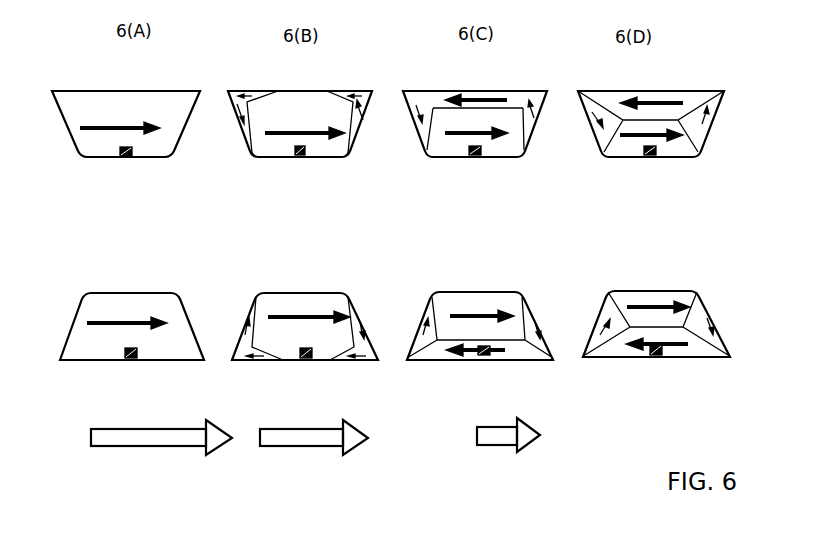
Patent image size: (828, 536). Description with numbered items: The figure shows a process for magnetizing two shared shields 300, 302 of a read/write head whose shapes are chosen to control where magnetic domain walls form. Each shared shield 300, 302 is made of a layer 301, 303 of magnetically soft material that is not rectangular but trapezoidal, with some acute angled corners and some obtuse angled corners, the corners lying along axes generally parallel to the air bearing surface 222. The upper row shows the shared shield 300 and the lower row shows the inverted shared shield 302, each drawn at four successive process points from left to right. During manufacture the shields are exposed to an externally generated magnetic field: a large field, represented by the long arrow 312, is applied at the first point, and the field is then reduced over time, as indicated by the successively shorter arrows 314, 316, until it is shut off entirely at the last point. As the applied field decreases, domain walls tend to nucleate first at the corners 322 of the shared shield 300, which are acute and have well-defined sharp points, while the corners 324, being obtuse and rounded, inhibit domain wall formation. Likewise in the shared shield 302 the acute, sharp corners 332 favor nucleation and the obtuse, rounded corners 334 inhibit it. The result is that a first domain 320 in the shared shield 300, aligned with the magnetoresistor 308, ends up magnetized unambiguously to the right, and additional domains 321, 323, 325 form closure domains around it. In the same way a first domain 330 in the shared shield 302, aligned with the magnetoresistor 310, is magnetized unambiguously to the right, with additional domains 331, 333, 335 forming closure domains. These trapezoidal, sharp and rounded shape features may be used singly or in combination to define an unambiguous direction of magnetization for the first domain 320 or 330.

The shared shield 300 is at (80, 58).
The layer 301 is at (100, 142).
The air bearing surface 222 is at (107, 160).
The magnetoresistor 308 is at (127, 158).
The shared shield 302 is at (84, 271).
The layer 303 is at (110, 345).
The magnetoresistor 310 is at (133, 360).
The corners 322 is at (228, 91).
The corners 324 is at (255, 158).
The corners 334 is at (256, 293).
The corners 332 is at (233, 360).
The first domain 320 is at (672, 147).
The domain 321 is at (710, 121).
The domain 323 is at (642, 96).
The domain 325 is at (593, 120).
The first domain 330 is at (687, 350).
The domain 331 is at (710, 323).
The domain 333 is at (645, 297).
The domain 335 is at (600, 320).
The arrow 312 is at (170, 438).
The arrow 314 is at (318, 438).
The arrow 316 is at (502, 433).